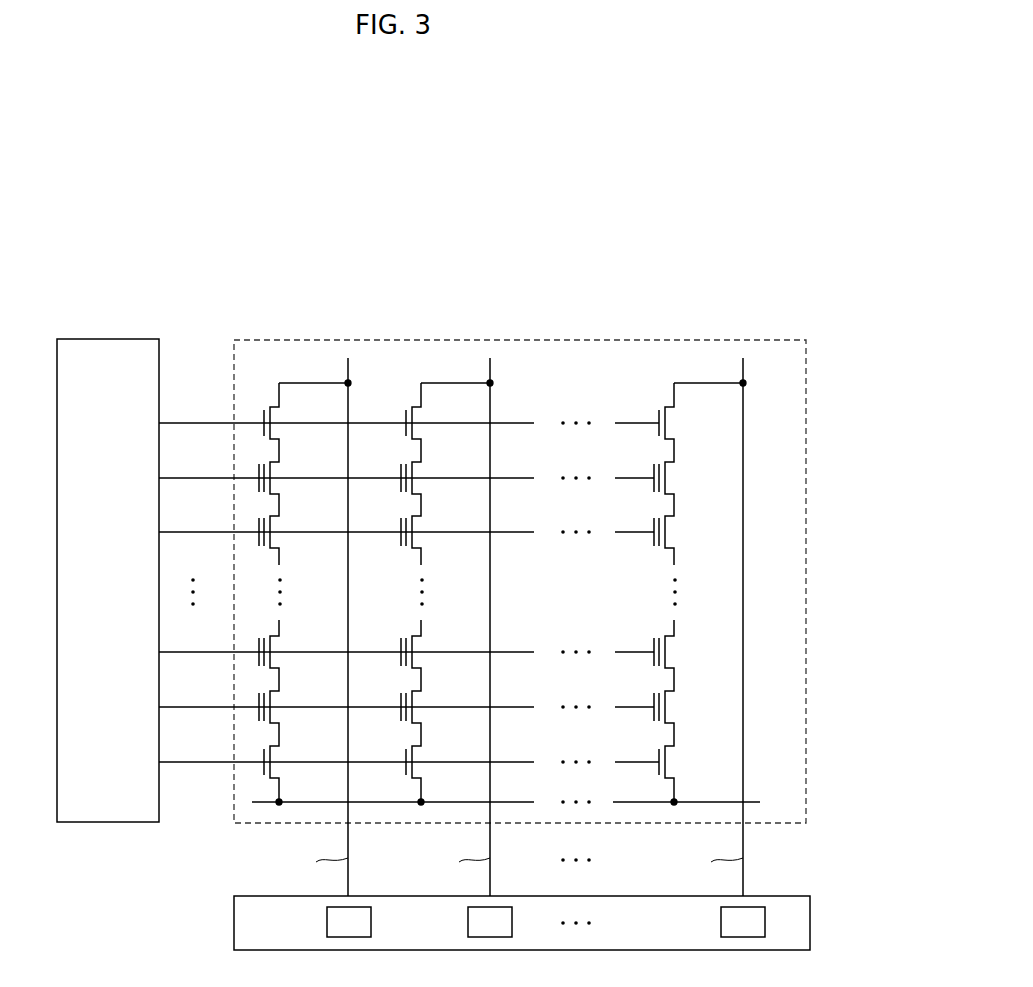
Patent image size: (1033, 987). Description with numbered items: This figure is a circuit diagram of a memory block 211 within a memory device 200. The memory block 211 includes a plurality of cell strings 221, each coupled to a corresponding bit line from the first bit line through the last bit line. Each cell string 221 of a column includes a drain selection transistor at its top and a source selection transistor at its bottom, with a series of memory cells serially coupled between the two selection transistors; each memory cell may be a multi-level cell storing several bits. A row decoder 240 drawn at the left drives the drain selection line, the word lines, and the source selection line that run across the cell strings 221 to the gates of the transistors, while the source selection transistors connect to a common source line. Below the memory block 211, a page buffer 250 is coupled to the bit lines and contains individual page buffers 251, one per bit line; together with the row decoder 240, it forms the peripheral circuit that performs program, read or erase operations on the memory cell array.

The memory device 200 is at (757, 252).
The row decoder 240 is at (108, 339).
The cell string 221 is at (268, 381).
The memory block 211 is at (710, 339).
The page buffer 250 is at (234, 921).
The page buffer 251 is at (327, 921).